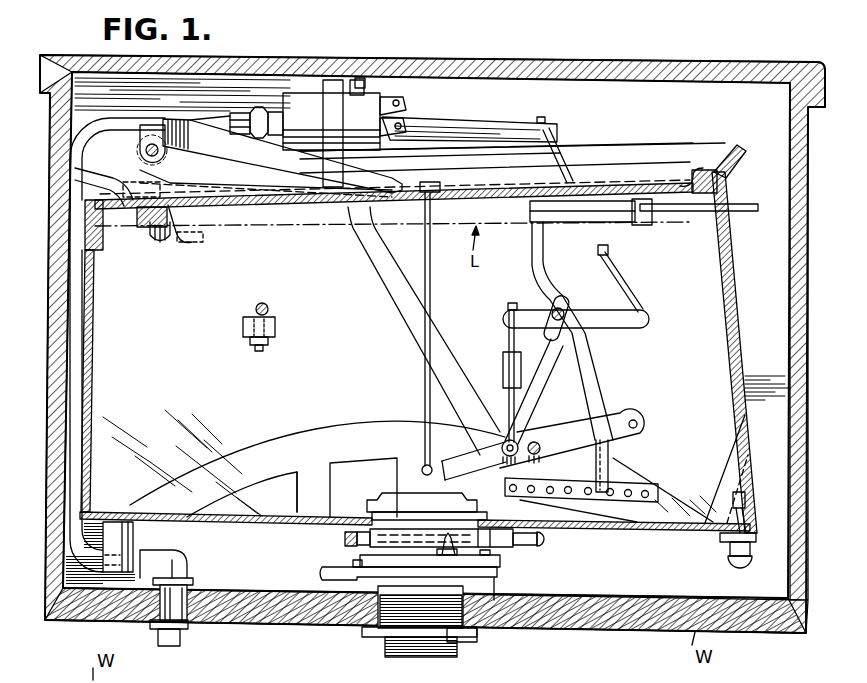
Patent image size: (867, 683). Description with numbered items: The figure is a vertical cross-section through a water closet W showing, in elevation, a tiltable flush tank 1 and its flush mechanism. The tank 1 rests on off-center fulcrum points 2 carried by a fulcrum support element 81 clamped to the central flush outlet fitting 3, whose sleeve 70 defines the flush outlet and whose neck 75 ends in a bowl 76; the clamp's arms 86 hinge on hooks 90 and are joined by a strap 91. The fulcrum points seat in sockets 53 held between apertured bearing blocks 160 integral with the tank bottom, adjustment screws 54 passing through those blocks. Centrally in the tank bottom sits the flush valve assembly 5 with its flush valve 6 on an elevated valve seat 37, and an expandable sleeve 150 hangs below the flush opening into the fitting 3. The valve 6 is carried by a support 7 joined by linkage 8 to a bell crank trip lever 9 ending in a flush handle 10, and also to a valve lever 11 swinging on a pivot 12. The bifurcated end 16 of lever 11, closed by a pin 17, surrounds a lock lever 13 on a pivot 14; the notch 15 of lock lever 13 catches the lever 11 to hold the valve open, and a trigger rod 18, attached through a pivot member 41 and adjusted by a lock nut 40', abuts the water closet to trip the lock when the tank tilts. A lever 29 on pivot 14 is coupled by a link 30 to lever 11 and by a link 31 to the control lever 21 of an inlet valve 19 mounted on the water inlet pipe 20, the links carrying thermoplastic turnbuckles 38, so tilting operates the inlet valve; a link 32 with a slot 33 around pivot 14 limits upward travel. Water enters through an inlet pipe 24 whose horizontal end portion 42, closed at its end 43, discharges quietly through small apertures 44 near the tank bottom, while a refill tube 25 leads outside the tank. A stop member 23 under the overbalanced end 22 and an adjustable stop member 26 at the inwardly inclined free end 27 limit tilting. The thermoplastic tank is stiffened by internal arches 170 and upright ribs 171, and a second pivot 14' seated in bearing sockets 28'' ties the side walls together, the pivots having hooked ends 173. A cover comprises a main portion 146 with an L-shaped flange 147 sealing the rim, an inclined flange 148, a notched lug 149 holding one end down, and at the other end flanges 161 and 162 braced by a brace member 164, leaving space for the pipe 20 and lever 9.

The flush tank 1 is at (742, 312).
The fulcrum points 2 is at (500, 556).
The flush outlet fitting 3 is at (372, 588).
The flush valve assembly 5 is at (378, 496).
The flush valve 6 is at (462, 502).
The valve support 7 is at (423, 468).
The linkage 8 is at (432, 302).
The bell crank trip lever 9 is at (196, 130).
The flush handle 10 is at (204, 238).
The valve lever 11 is at (459, 462).
The pivot 12 is at (537, 441).
The lock lever 13 is at (600, 392).
The pivot 14 is at (572, 312).
The pivot 14' is at (280, 300).
The notch 15 is at (597, 462).
The bifurcation 16 is at (624, 420).
The pin 17 is at (645, 425).
The trigger rod 18 is at (750, 212).
The inlet valve 19 is at (286, 100).
The water inlet pipe 20 is at (118, 125).
The control lever 21 is at (468, 126).
The overbalanced end 22 is at (96, 428).
The stop member 23 is at (138, 548).
The inlet pipe 24 is at (398, 300).
The refill tube 25 is at (360, 80).
The adjustable stop member 26 is at (746, 567).
The free end 27 is at (746, 381).
The bearing sockets 28'' is at (282, 327).
The lever 29 is at (608, 322).
The link 30 is at (510, 333).
The link 31 is at (630, 300).
The link 32 is at (536, 396).
The slot 33 is at (564, 302).
The flush valve seat 37 is at (470, 523).
The turnbuckles 38 is at (510, 376).
The lock nut 40' is at (663, 227).
The pivot member 41 is at (580, 224).
The end portion 42 is at (640, 484).
The end 43 is at (665, 503).
The apertures 44 is at (583, 512).
The fulcrum point receiving sockets 53 is at (430, 538).
The adjustment screws 54 is at (348, 539).
The sleeve 70 is at (458, 650).
The neck 75 is at (355, 582).
The bowl 76 is at (322, 573).
The fulcrum support element 81 is at (505, 562).
The arms 86 is at (492, 580).
The hook 90 is at (352, 562).
The strap 91 is at (496, 582).
The main portion 146 is at (601, 185).
The L-shaped flange 147 is at (708, 170).
The inclined flange 148 is at (738, 145).
The notched lug 149 is at (722, 193).
The expandable sleeve 150 is at (440, 545).
The bearing blocks 160 is at (170, 235).
The flange 161 is at (126, 218).
The flange 162 is at (108, 182).
The brace member 164 is at (178, 186).
The internal arches 170 is at (245, 447).
The upright ribs 171 is at (300, 500).
The hooked ends 173 is at (260, 348).